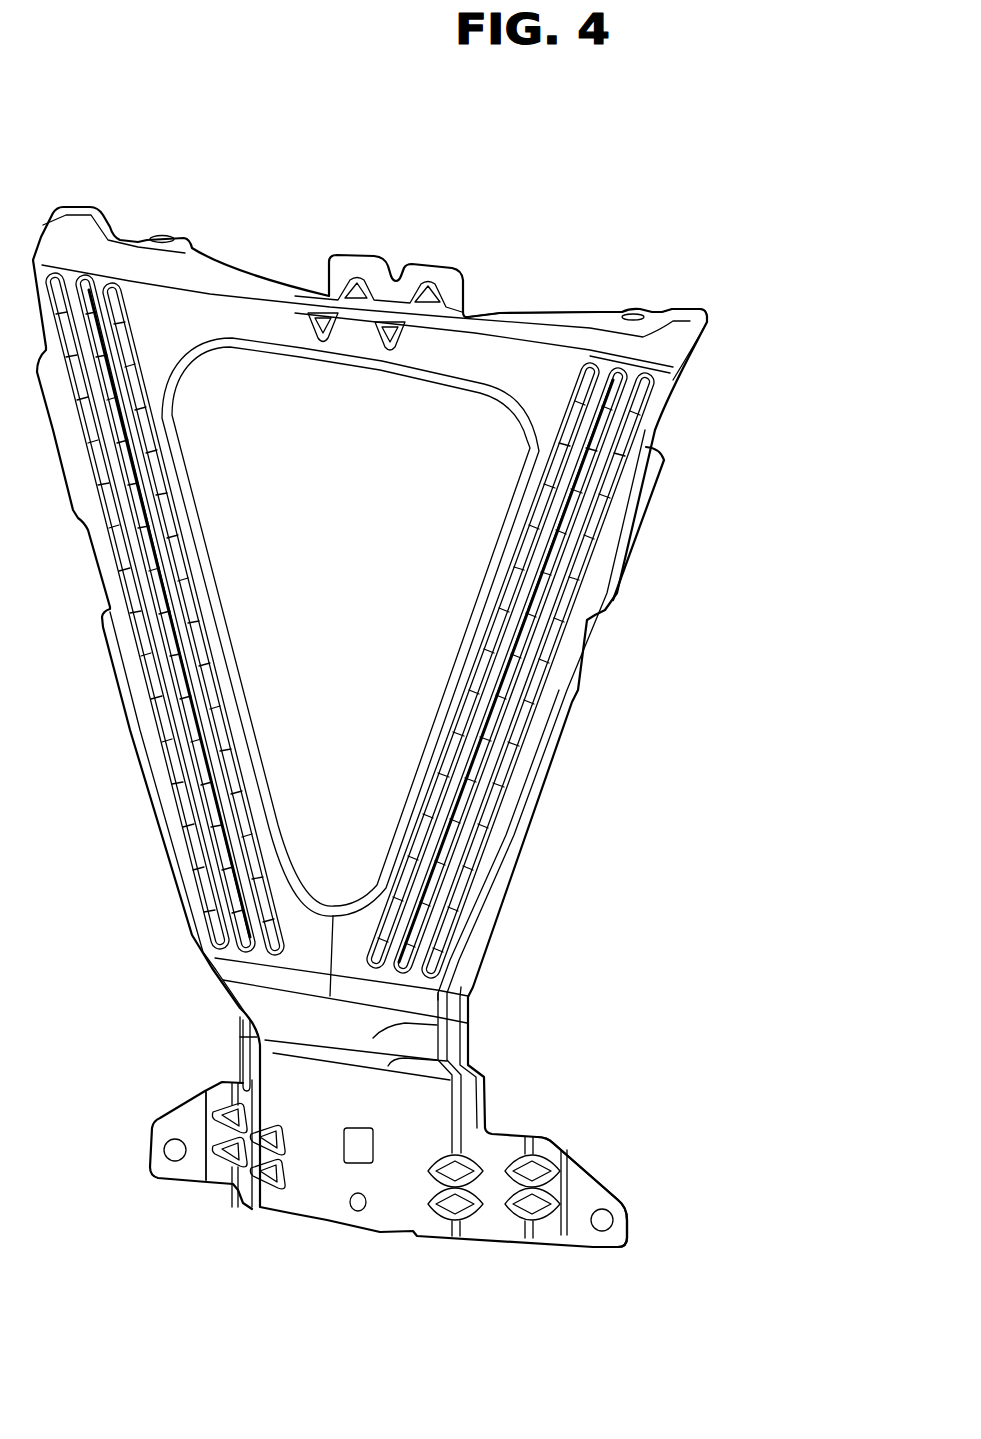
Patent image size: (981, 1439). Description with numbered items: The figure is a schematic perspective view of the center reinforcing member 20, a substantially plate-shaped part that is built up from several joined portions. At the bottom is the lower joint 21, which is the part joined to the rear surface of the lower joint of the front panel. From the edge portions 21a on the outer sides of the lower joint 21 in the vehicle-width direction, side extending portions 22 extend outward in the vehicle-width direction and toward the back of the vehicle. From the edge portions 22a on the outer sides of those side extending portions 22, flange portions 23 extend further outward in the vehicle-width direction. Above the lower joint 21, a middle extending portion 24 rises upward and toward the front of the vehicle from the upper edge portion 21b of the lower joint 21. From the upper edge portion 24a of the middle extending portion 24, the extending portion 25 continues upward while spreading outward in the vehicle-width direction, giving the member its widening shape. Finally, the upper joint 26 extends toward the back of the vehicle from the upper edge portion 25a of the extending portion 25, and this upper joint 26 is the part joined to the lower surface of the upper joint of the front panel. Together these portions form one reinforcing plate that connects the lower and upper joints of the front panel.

The center reinforcing member 20 is at (305, 108).
The lower joint 21 is at (315, 1163).
The edge portions 21a is at (267, 1202).
The upper edge portion 21b is at (470, 1070).
The side extending portions 22 is at (250, 1207).
The edge portions 22a is at (240, 1187).
The flange portions 23 is at (172, 1128).
The middle extending portion 24 is at (460, 1040).
The upper edge portion 24a is at (480, 993).
The extending portion 25 is at (537, 403).
The upper edge portion 25a is at (470, 326).
The upper joint 26 is at (687, 312).